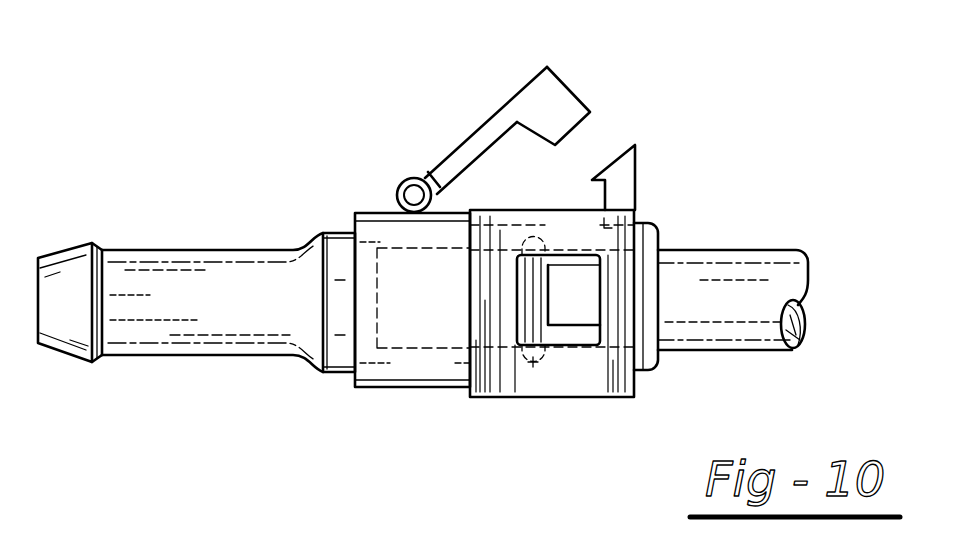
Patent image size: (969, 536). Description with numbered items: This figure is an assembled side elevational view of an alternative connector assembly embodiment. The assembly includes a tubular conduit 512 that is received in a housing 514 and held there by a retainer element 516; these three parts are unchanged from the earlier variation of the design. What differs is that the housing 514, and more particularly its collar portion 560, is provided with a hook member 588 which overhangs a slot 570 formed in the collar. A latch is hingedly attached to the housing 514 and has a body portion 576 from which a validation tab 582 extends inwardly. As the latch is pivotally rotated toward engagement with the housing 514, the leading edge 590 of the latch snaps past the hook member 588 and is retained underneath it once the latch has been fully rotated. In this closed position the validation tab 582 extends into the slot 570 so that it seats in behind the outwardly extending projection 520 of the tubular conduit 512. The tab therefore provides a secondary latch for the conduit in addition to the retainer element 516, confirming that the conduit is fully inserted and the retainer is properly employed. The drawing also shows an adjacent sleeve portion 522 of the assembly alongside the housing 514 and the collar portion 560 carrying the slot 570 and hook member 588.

The tubular conduit 512 is at (777, 258).
The housing 514 is at (194, 258).
The retainer element 516 is at (660, 242).
The outwardly extending projection 520 is at (533, 368).
The sleeve body 522 is at (405, 333).
The collar portion 560 is at (612, 380).
The slot 570 is at (568, 212).
The body portion 576 is at (443, 160).
The validation tab 582 is at (565, 107).
The hook member 588 is at (623, 178).
The leading edge 590 is at (565, 82).